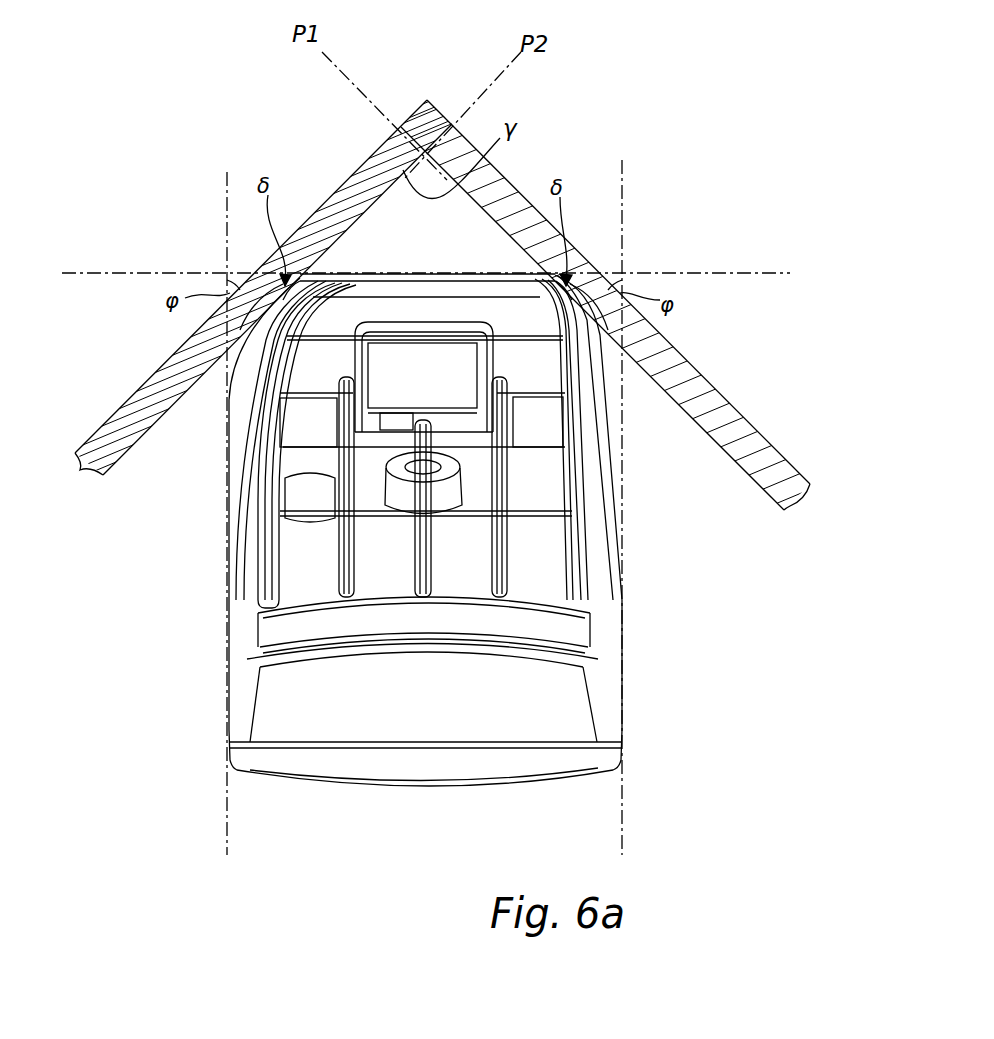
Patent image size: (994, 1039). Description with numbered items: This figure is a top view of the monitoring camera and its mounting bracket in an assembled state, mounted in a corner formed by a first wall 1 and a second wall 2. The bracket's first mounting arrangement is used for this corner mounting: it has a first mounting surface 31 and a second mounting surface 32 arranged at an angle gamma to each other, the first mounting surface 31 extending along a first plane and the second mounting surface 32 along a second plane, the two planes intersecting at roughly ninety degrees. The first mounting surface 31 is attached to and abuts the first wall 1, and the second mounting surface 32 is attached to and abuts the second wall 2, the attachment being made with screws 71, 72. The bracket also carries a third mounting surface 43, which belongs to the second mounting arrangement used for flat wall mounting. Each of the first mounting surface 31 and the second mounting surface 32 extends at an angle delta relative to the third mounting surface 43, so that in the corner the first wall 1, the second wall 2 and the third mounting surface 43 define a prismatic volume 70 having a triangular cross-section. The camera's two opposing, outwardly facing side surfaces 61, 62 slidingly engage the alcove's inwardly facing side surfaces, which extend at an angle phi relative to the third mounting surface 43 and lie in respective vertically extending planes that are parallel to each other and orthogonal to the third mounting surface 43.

The first wall 1 is at (703, 446).
The second wall 2 is at (149, 448).
The prismatic volume 70 is at (386, 462).
The third mounting surface 43 is at (437, 272).
The second mounting surface 32 is at (280, 280).
The first mounting surface 31 is at (572, 270).
The screw 72 is at (258, 305).
The screw 71 is at (615, 302).
The outwardly facing side surface 62 is at (227, 832).
The outwardly facing side surface 61 is at (622, 832).